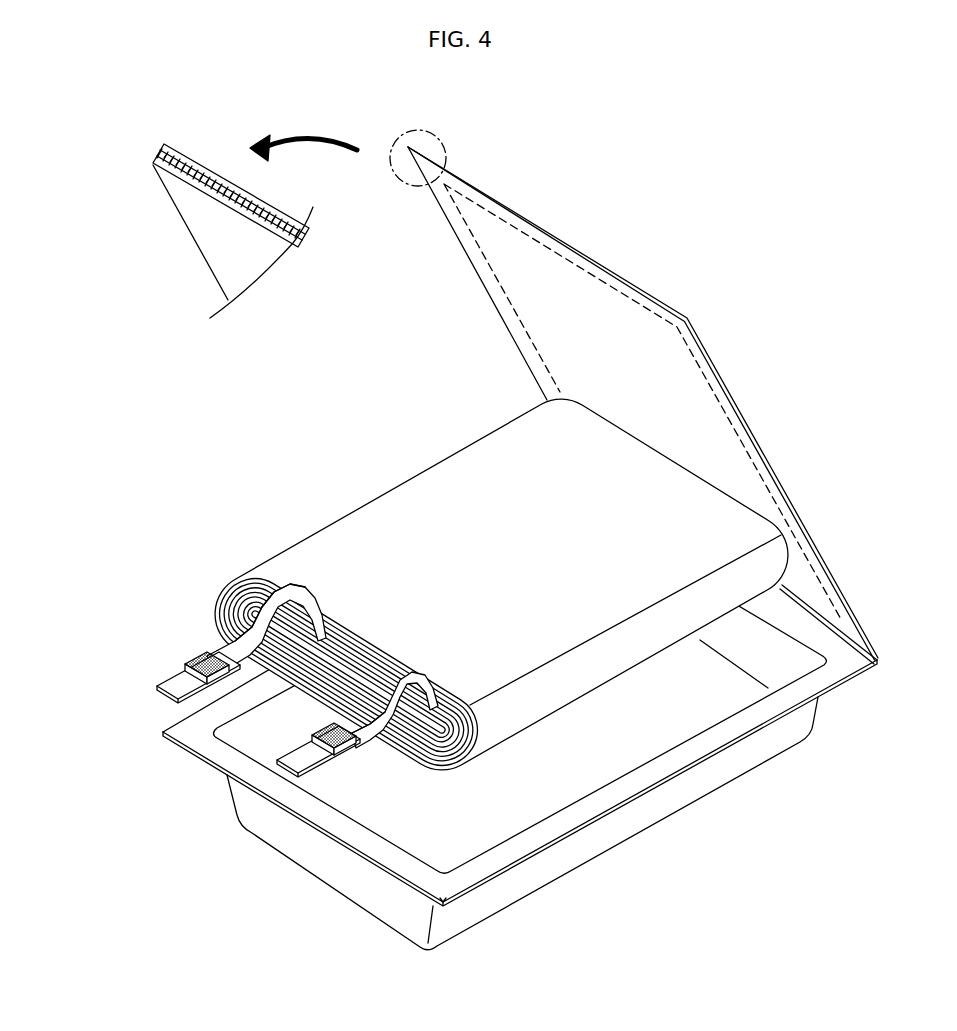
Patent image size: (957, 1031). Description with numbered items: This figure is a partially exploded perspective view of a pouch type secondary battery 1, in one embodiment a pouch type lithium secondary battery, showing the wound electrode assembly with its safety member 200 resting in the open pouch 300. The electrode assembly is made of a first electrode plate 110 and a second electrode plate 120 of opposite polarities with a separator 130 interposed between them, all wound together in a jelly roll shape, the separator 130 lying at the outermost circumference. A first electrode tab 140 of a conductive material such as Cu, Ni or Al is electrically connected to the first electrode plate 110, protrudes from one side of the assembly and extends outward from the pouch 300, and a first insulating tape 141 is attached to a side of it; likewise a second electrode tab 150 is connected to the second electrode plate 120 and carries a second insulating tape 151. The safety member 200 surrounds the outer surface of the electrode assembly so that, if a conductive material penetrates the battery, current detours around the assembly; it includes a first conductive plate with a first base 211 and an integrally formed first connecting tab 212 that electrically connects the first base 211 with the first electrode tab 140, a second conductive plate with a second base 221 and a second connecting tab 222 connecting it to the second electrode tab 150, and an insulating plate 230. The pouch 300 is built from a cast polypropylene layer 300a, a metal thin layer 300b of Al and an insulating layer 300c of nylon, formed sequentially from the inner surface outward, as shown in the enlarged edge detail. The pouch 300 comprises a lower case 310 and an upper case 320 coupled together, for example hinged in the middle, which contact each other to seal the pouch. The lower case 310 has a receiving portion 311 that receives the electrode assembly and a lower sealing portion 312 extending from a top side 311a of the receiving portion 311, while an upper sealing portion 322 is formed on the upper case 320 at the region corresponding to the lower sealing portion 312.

The pouch type secondary battery 1 is at (786, 116).
The first electrode plate 110 is at (452, 693).
The second electrode plate 120 is at (313, 643).
The separator 130 is at (372, 655).
The first electrode tab 140 is at (277, 762).
The first insulating tape 141 is at (325, 762).
The second electrode tab 150 is at (175, 677).
The second insulating tape 151 is at (190, 653).
The safety member 200 is at (375, 488).
The first base 211 is at (430, 675).
The first connecting tab 212 is at (278, 764).
The second base 221 is at (240, 573).
The second connecting tab 222 is at (232, 652).
The insulating plate 230 is at (230, 593).
The pouch 300 is at (612, 247).
The cast polypropylene (CPP) layer 300a is at (153, 163).
The metal thin layer 300b is at (158, 158).
The insulating layer 300c is at (173, 147).
The lower case 310 is at (757, 753).
The receiving portion 311 is at (447, 847).
The top side 311a is at (402, 868).
The lower sealing portion 312 is at (603, 803).
The upper case 320 is at (763, 453).
The upper sealing portion 322 is at (713, 370).